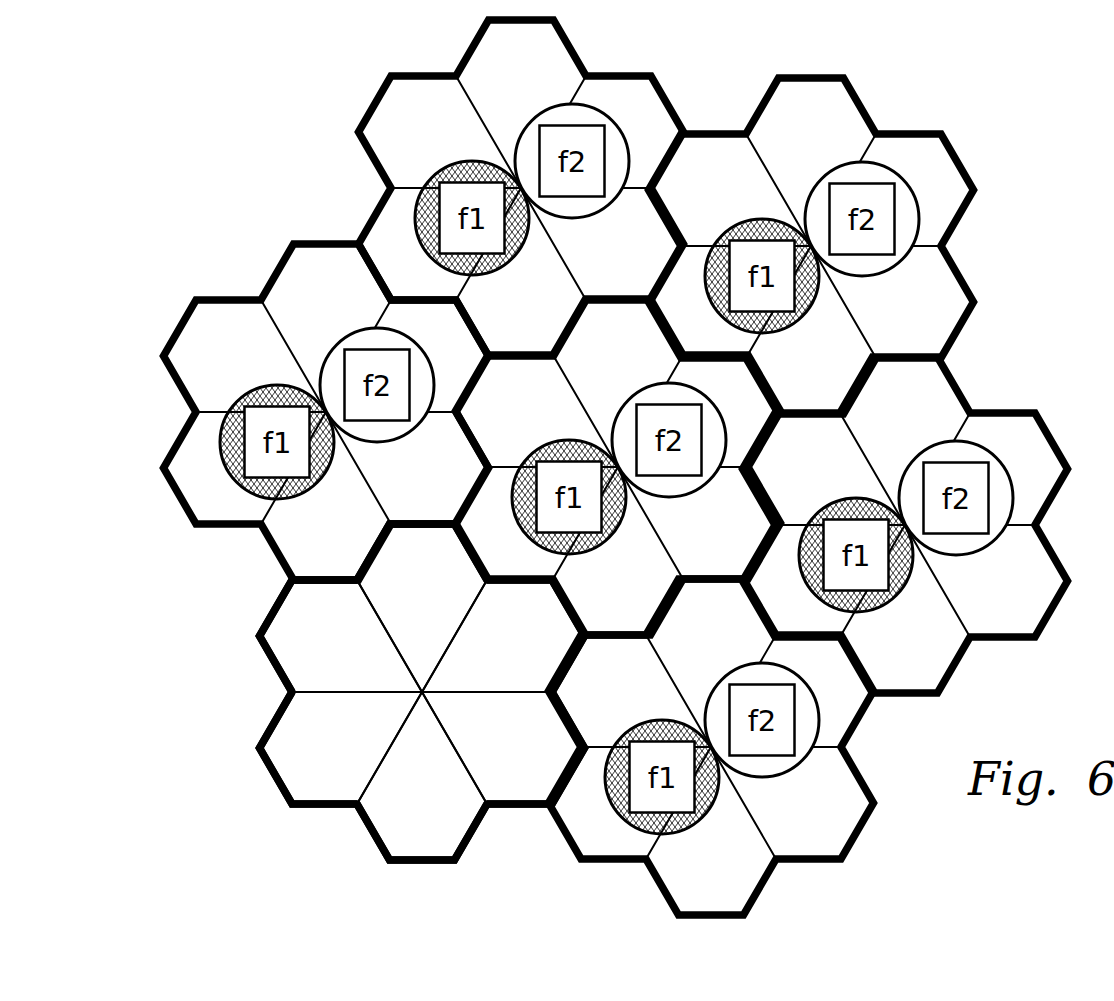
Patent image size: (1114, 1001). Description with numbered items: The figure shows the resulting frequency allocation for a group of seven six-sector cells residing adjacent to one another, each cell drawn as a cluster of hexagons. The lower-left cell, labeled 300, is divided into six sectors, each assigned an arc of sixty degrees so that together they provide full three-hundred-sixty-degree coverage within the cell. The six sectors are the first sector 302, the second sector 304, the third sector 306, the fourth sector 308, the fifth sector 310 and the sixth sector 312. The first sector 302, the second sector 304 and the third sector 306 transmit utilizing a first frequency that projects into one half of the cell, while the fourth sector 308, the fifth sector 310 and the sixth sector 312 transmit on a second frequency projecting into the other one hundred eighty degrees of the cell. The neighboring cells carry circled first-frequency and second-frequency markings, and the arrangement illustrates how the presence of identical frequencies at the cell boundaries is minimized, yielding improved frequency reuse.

The sectored cell cluster 300 is at (268, 627).
The sector f11 302 is at (393, 596).
The sector f12 304 is at (547, 637).
The sector f13 306 is at (547, 776).
The sector f21 308 is at (298, 637).
The sector f22 310 is at (298, 776).
The sector f23 312 is at (452, 815).